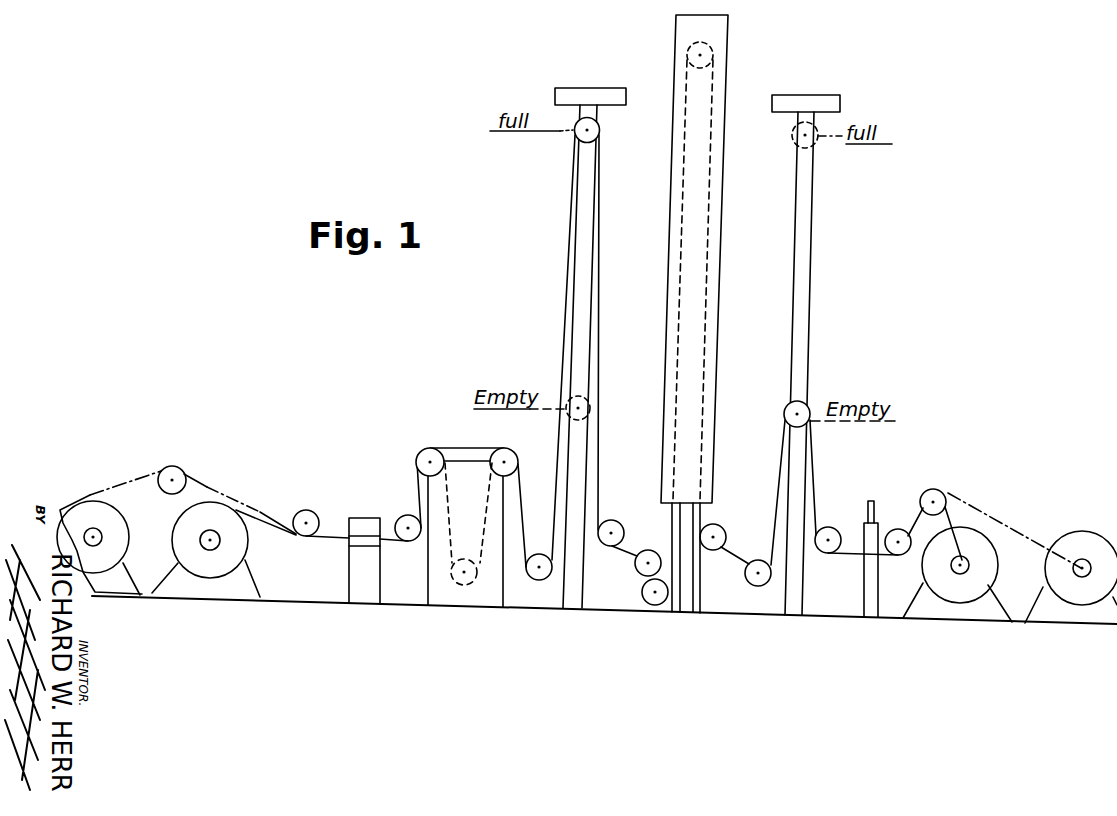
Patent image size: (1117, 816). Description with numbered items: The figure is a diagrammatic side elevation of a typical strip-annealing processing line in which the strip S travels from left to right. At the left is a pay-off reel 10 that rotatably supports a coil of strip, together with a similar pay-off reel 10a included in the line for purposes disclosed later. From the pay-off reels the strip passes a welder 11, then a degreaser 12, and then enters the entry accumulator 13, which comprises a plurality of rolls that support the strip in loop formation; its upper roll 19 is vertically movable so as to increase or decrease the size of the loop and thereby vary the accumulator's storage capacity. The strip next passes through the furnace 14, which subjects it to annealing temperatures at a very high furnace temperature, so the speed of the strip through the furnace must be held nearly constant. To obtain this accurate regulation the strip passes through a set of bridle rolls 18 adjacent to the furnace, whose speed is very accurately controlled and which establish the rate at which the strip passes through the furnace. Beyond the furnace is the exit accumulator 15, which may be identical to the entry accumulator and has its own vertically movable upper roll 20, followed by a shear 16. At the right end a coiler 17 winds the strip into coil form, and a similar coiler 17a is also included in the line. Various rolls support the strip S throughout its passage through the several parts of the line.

The strip S is at (328, 535).
The pay-off reel 10a is at (120, 584).
The pay-off reel 10 is at (233, 585).
The welder 11 is at (368, 585).
The degreaser 12 is at (487, 592).
The entry accumulator 13 is at (573, 598).
The furnace 14 is at (690, 478).
The exit accumulator 15 is at (792, 607).
The shear 16 is at (870, 605).
The coiler 17 is at (950, 612).
The coiler 17a is at (1063, 615).
The bridle rolls 18 is at (637, 578).
The upper roll 19 is at (578, 136).
The upper roll 20 is at (802, 410).